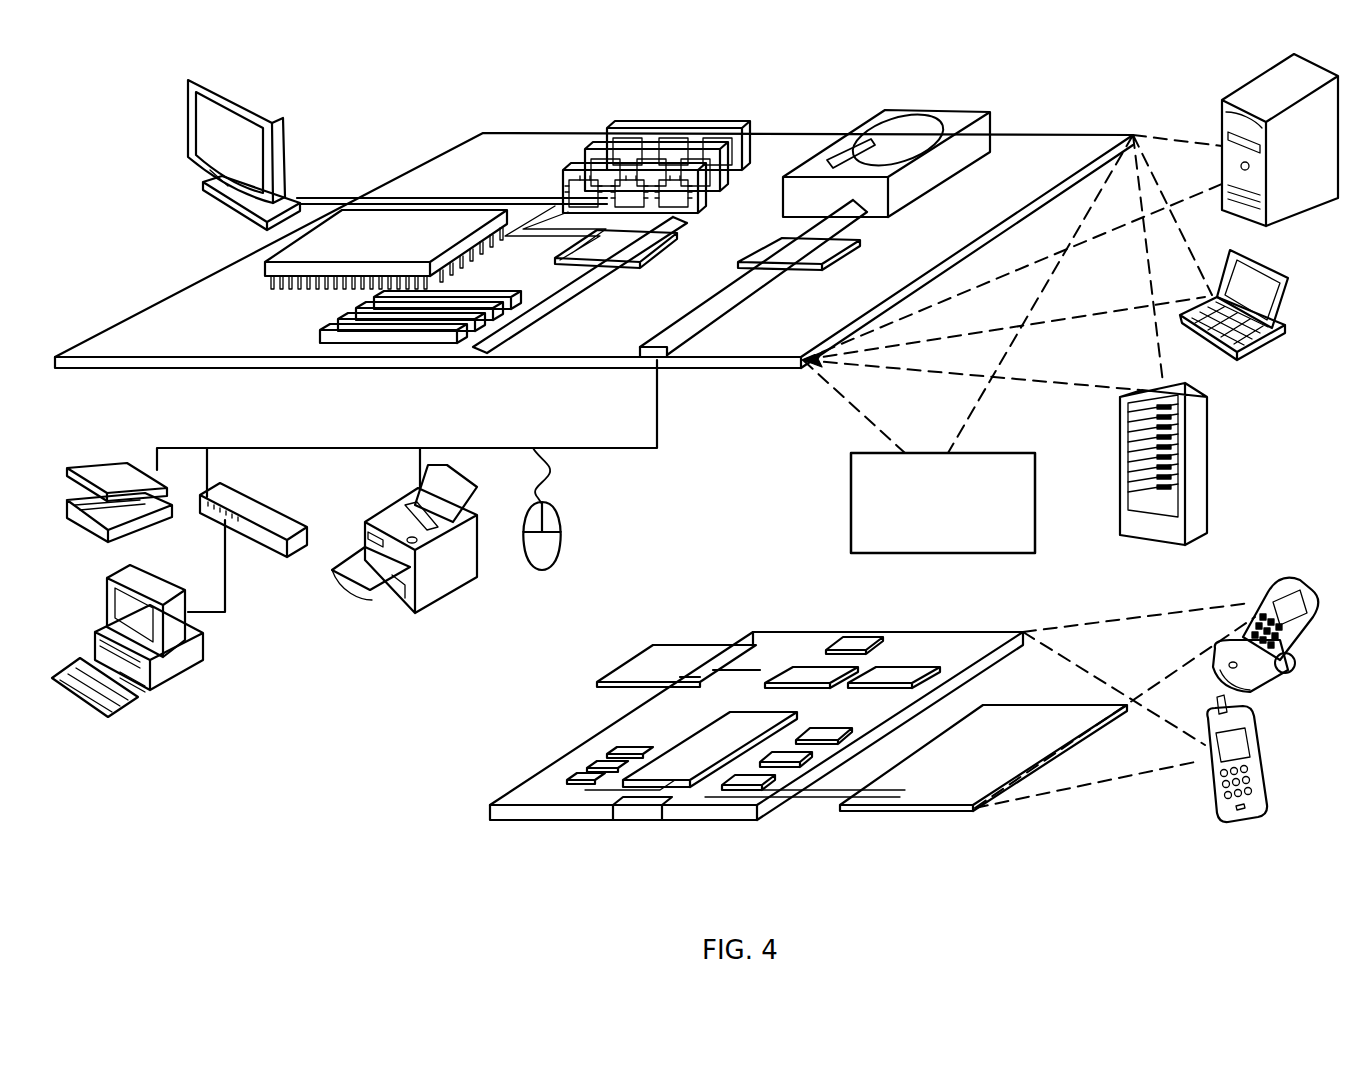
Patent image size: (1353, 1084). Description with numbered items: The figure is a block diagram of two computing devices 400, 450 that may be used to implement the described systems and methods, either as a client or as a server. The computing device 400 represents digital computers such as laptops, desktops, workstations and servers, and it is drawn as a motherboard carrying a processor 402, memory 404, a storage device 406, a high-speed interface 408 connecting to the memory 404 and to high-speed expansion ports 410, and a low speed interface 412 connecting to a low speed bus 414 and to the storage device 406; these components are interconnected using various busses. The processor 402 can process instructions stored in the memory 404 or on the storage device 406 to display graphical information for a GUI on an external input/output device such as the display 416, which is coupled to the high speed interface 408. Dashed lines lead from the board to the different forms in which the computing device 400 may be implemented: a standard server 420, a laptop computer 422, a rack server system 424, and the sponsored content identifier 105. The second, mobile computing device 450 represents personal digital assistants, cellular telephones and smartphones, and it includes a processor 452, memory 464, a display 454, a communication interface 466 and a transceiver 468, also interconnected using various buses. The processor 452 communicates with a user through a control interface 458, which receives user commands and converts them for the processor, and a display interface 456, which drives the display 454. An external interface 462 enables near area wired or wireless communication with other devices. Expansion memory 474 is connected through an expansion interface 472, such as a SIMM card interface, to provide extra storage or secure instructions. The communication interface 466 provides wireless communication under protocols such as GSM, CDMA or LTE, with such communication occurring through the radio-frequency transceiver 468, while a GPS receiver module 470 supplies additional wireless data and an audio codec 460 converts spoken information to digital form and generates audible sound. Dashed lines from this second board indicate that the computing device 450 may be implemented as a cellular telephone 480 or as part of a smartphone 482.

The computing device 400 is at (403, 106).
The processor 402 is at (262, 264).
The memory 404 is at (618, 128).
The storage device 406 is at (873, 118).
The high-speed interface 408 is at (590, 247).
The high-speed expansion ports 410 is at (340, 323).
The low speed interface 412 is at (778, 248).
The low speed bus 414 is at (668, 360).
The display 416 is at (200, 76).
The standard server 420 is at (1222, 118).
The laptop computer 422 is at (1292, 278).
The rack server system 424 is at (1120, 490).
The sponsored content identifier 105 is at (851, 520).
The computing device 450 is at (461, 820).
The processor 452 is at (680, 770).
The display 454 is at (940, 792).
The display interface 456 is at (754, 780).
The control interface 458 is at (785, 762).
The audio codec 460 is at (832, 738).
The external interface 462 is at (643, 812).
The memory 464 is at (585, 770).
The communication interface 466 is at (811, 672).
The transceiver 468 is at (893, 672).
The GPS receiver module 470 is at (866, 638).
The expansion interface 472 is at (743, 648).
The expansion memory 474 is at (655, 648).
The cellular telephone 480 is at (1270, 590).
The smartphone 482 is at (1210, 778).